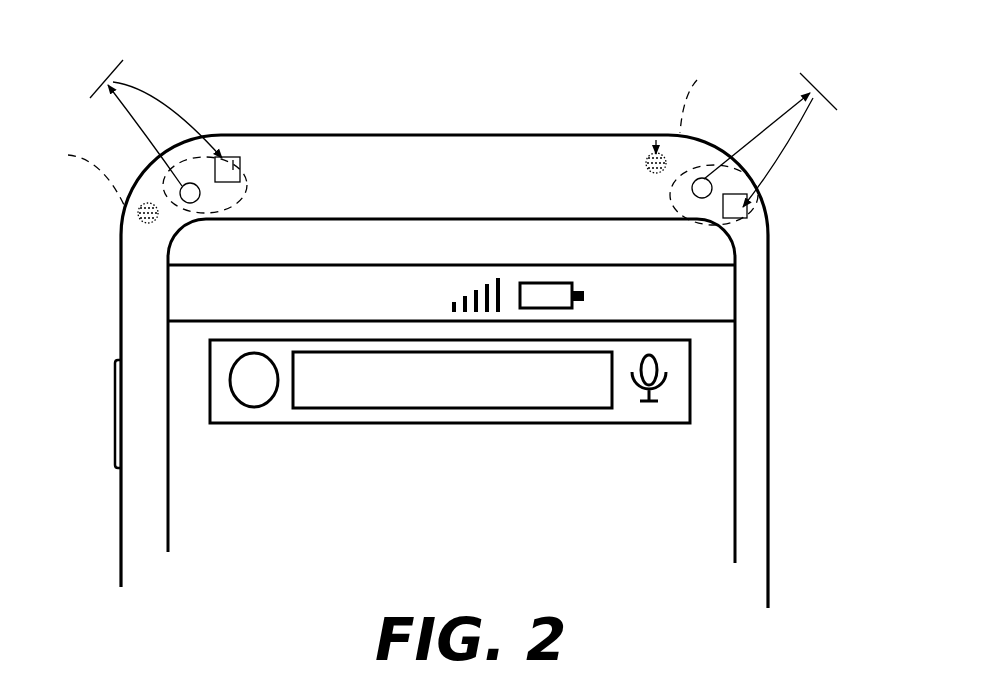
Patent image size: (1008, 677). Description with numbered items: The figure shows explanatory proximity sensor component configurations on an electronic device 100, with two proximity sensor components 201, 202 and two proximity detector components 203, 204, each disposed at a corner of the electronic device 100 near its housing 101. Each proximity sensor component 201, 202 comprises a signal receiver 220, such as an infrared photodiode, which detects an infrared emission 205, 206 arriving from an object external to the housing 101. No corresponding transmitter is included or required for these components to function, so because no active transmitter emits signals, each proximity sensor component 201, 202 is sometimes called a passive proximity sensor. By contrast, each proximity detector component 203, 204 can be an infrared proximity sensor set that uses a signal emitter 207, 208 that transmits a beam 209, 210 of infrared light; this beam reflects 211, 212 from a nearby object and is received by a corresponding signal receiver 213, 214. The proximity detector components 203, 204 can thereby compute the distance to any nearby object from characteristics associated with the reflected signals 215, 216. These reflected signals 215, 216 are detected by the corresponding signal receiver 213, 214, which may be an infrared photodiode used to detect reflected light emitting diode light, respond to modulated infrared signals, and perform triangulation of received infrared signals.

The electronic device 100 is at (805, 405).
The housing 101 is at (440, 132).
The proximity sensor component 201 is at (141, 232).
The proximity sensor component 202 is at (655, 136).
The proximity detector component 203 is at (245, 157).
The proximity detector component 204 is at (674, 188).
The infrared emission 205 is at (118, 168).
The infrared emission 206 is at (687, 100).
The signal emitter 207 is at (201, 188).
The signal emitter 208 is at (700, 215).
The beam 209 is at (140, 137).
The beam 210 is at (767, 123).
The reflection 211 is at (102, 80).
The reflection 212 is at (827, 92).
The signal receiver 213 is at (233, 163).
The signal receiver 214 is at (755, 210).
The reflected signal 215 is at (152, 102).
The reflected signal 216 is at (800, 125).
The signal receiver 220 is at (138, 212).